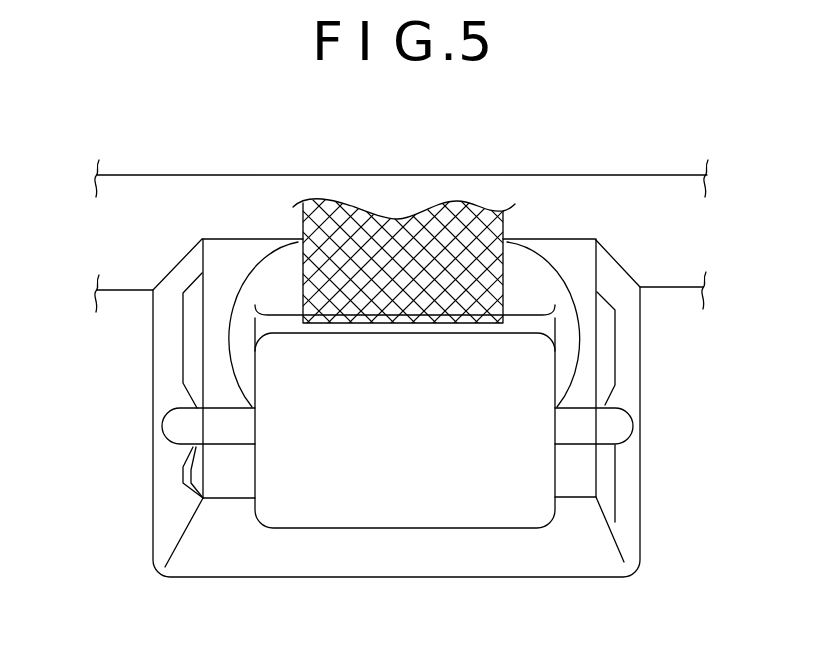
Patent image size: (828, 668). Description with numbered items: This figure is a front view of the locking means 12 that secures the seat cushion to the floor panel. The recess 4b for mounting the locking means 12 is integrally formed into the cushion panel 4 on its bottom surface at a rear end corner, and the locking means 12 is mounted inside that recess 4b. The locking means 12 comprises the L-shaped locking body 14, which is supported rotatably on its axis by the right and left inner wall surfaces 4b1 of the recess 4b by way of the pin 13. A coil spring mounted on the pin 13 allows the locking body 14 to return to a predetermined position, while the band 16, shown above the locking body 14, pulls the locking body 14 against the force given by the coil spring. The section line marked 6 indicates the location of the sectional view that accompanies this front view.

The cushion panel 4 is at (696, 383).
The recess 4b is at (187, 565).
The inner wall surfaces 4b1 is at (165, 500).
The section line of FIG. 6 is at (402, 153).
The locking means 12 is at (523, 538).
The pin 13 is at (173, 427).
The locking body 14 is at (328, 513).
The band 16 is at (491, 210).